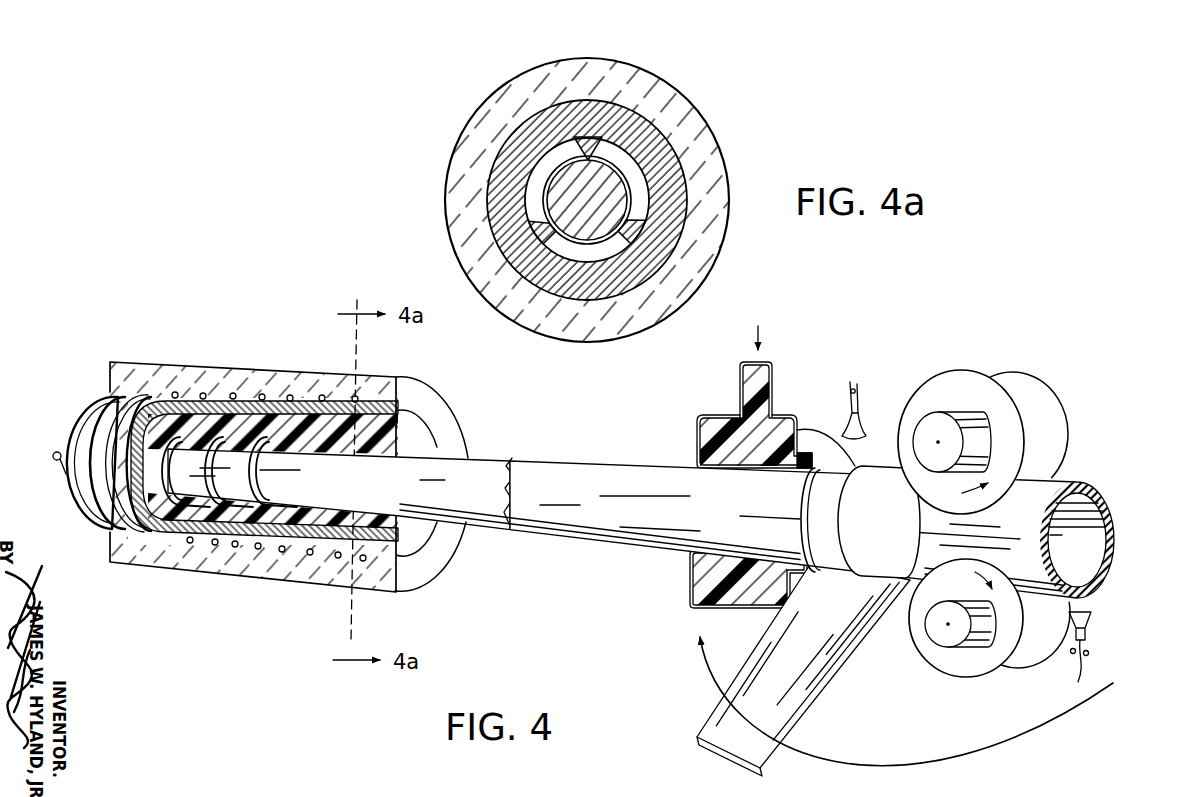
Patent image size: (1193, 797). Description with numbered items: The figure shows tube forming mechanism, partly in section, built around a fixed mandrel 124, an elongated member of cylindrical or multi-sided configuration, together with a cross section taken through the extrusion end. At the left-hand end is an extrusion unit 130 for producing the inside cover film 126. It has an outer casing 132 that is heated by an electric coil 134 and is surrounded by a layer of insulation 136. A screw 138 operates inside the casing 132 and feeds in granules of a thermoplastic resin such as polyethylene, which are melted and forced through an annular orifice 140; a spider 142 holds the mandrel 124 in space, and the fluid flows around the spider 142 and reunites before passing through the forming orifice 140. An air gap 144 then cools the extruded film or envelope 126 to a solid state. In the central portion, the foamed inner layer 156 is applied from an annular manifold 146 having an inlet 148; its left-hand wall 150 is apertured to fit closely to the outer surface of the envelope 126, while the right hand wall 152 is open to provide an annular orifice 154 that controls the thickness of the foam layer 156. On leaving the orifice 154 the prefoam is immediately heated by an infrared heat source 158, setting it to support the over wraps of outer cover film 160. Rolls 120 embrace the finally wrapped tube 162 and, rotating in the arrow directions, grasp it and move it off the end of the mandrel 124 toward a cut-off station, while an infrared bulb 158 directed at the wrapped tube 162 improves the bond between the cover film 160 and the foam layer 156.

In FIG. 4, the rolls 120 is at (951, 385).
In FIG. 4, the fixed mandrel 124 is at (482, 487).
In FIG. 4, the inside cover film 126 is at (545, 516).
In FIG. 4, the extrusion unit 130 is at (278, 584).
In FIG. 4a, the outer casing 132 is at (688, 197).
In FIG. 4, the outer casing 132 is at (406, 542).
In FIG. 4, the electric coil 134 is at (66, 500).
In FIG. 4a, the layer of insulation 136 is at (714, 140).
In FIG. 4, the layer of insulation 136 is at (162, 365).
In FIG. 4, the screw 138 is at (236, 460).
In FIG. 4, the annular orifice 140 is at (404, 444).
In FIG. 4a, the spider 142 is at (590, 152).
In FIG. 4, the spider 142 is at (322, 450).
In FIG. 4, the air gap 144 is at (591, 447).
In FIG. 4, the annular manifold 146 is at (787, 412).
In FIG. 4, the inlet 148 is at (772, 379).
In FIG. 4, the wall 150 is at (690, 576).
In FIG. 4, the right hand wall 152 is at (793, 608).
In FIG. 4, the annular orifice 154 is at (808, 450).
In FIG. 4, the foamed inner layer 156 is at (806, 515).
In FIG. 4, the infrared heat source 158 is at (860, 414).
In FIG. 4, the outer cover film 160 is at (818, 690).
In FIG. 4, the wrapped tube 162 is at (884, 455).